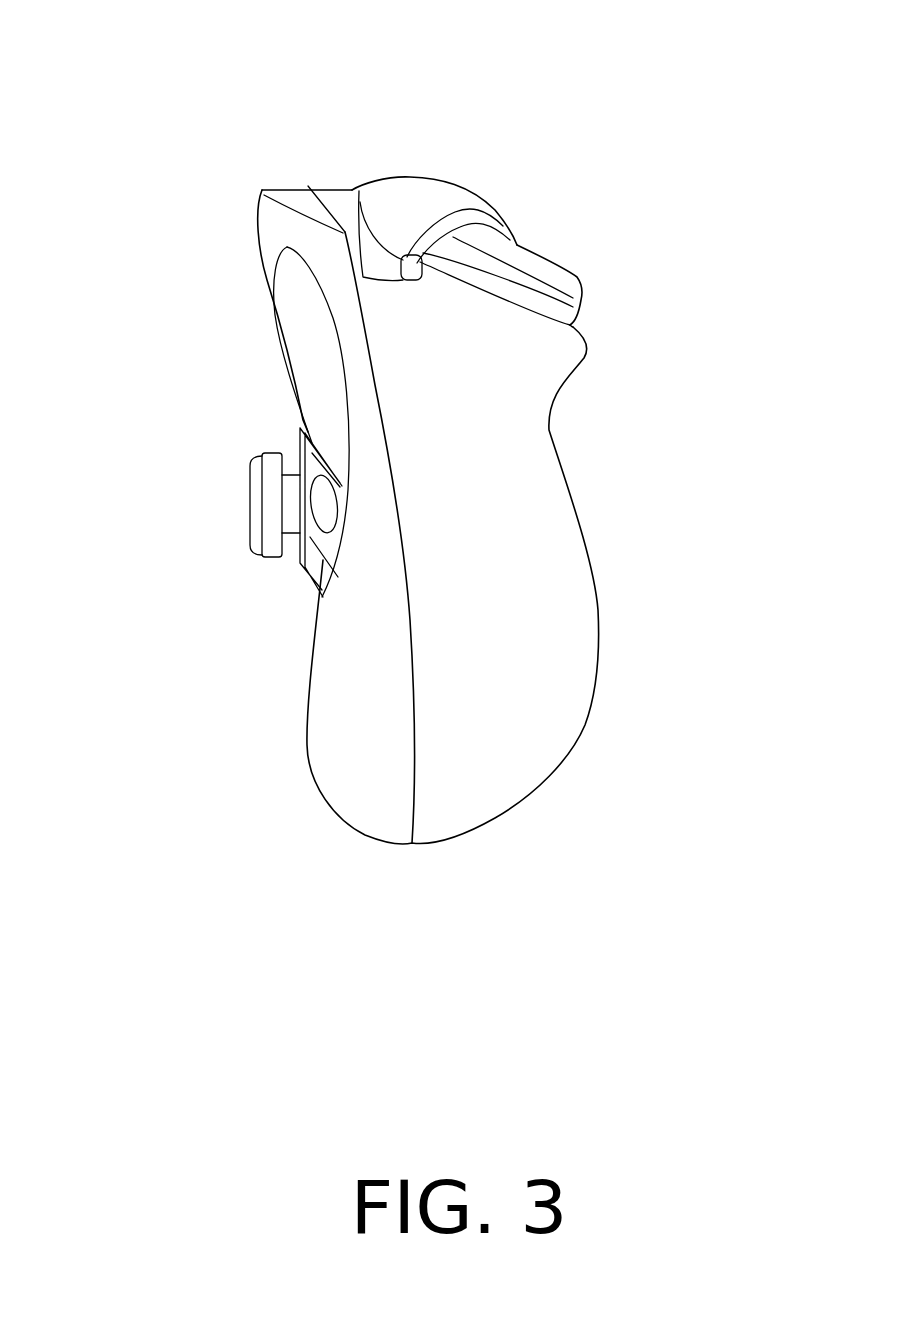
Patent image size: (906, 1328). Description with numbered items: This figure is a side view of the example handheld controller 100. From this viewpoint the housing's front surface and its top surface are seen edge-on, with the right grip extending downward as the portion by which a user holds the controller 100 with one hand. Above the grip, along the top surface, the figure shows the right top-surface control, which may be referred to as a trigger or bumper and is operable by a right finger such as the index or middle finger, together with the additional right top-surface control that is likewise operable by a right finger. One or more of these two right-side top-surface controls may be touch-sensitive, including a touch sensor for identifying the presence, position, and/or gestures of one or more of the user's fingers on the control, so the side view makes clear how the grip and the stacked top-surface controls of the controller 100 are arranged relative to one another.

The handheld controller 100 is at (407, 448).